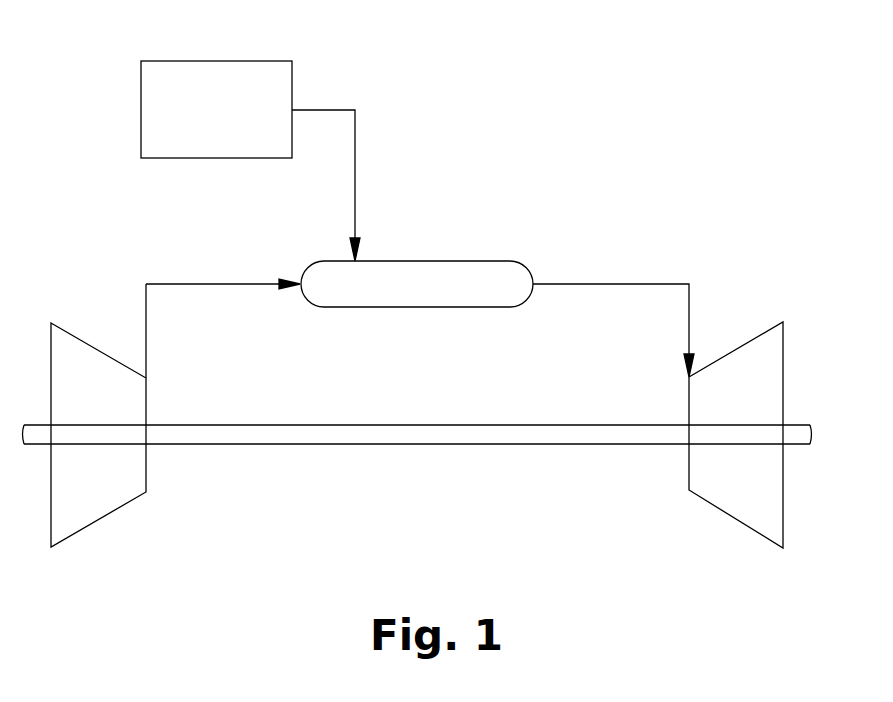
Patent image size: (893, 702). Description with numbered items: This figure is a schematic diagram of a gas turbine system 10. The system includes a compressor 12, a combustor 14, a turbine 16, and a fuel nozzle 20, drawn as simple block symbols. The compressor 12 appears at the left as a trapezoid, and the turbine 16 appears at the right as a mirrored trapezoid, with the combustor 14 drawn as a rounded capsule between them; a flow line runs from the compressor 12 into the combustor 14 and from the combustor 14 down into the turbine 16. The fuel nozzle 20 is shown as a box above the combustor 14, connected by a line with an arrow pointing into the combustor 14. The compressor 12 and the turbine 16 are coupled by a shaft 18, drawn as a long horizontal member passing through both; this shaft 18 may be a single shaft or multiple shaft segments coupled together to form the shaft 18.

The gas turbine system 10 is at (648, 172).
The compressor 12 is at (97, 518).
The combustor 14 is at (415, 261).
The turbine 16 is at (783, 357).
The shaft 18 is at (417, 444).
The fuel nozzle 20 is at (292, 61).